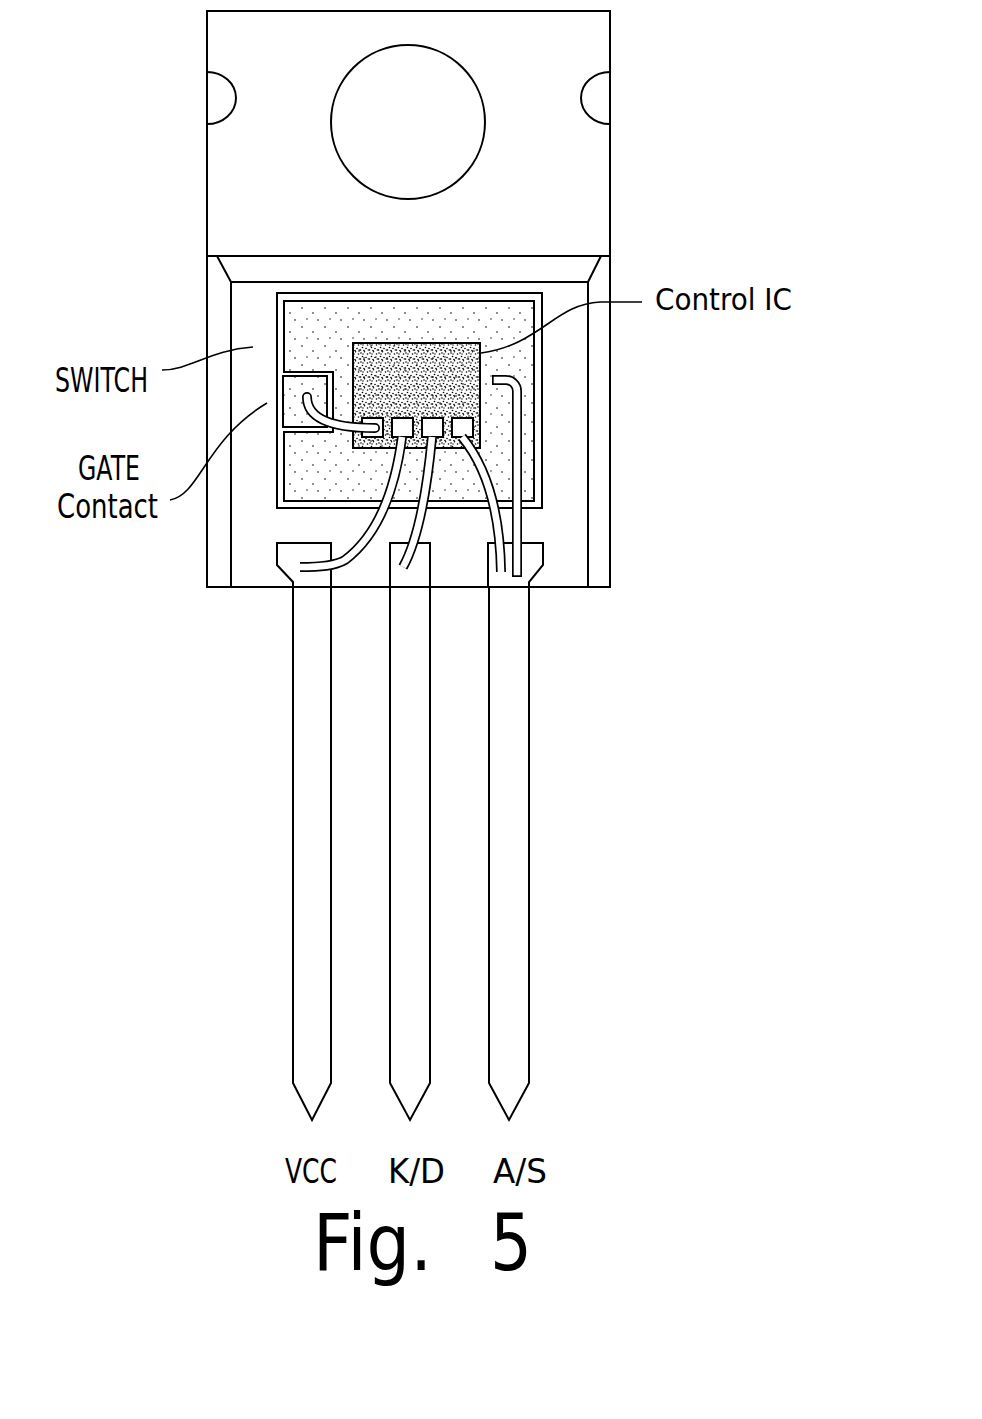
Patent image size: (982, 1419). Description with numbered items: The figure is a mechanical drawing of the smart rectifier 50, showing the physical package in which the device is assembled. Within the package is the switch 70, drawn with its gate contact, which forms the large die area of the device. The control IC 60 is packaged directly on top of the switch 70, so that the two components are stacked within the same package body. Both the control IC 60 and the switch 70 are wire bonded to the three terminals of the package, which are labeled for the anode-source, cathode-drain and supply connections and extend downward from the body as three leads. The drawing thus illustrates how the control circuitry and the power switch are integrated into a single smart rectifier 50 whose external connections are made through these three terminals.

The smart rectifier 50 is at (677, 194).
The control IC 60 is at (481, 366).
The switch 70 is at (243, 310).